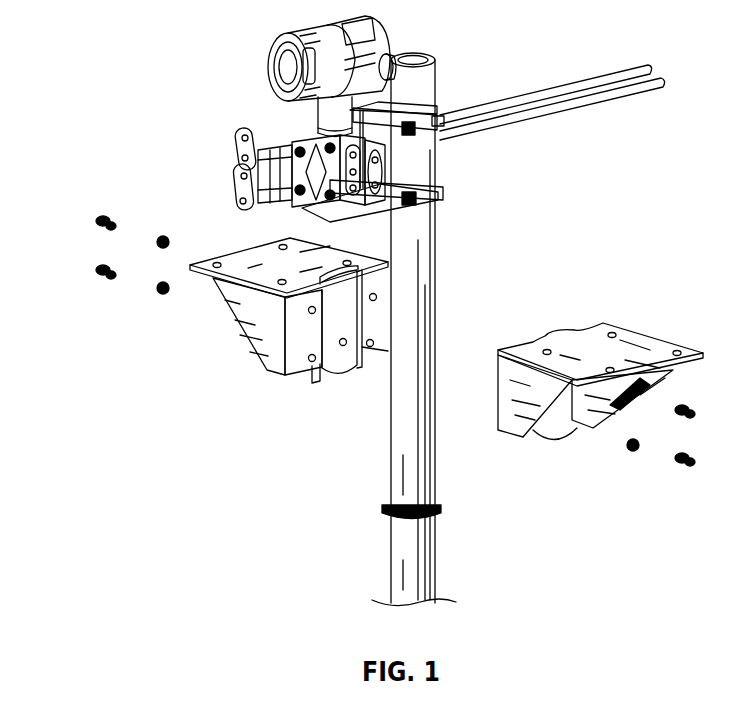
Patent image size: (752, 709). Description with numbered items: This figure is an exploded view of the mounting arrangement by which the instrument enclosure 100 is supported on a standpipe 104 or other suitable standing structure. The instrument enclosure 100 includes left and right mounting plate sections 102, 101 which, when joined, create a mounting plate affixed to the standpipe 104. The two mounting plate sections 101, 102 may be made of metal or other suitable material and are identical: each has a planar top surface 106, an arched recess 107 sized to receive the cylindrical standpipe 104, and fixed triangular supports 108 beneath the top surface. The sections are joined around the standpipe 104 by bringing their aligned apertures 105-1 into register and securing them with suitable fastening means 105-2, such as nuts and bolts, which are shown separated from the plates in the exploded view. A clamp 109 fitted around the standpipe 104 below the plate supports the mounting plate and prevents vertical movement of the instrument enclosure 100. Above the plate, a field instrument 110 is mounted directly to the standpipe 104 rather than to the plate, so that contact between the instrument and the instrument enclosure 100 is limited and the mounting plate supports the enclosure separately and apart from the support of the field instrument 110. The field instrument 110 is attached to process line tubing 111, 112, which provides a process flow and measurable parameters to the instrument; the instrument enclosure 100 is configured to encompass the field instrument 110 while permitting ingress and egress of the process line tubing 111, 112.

The instrument enclosure 100 is at (120, 56).
The right mounting plate section 101 is at (637, 338).
The left mounting plate section 102 is at (243, 325).
The standpipe 104 is at (400, 558).
The aligned apertures 105-1 is at (373, 297).
The fastening means 105-2 is at (723, 488).
The planar top surface 106 is at (262, 252).
The arched recess 107 is at (328, 357).
The fixed triangular supports 108 is at (507, 408).
The clamp 109 is at (385, 513).
The field instrument 110 is at (324, 33).
The process line tubing 111 is at (578, 85).
The process line tubing 112 is at (623, 90).